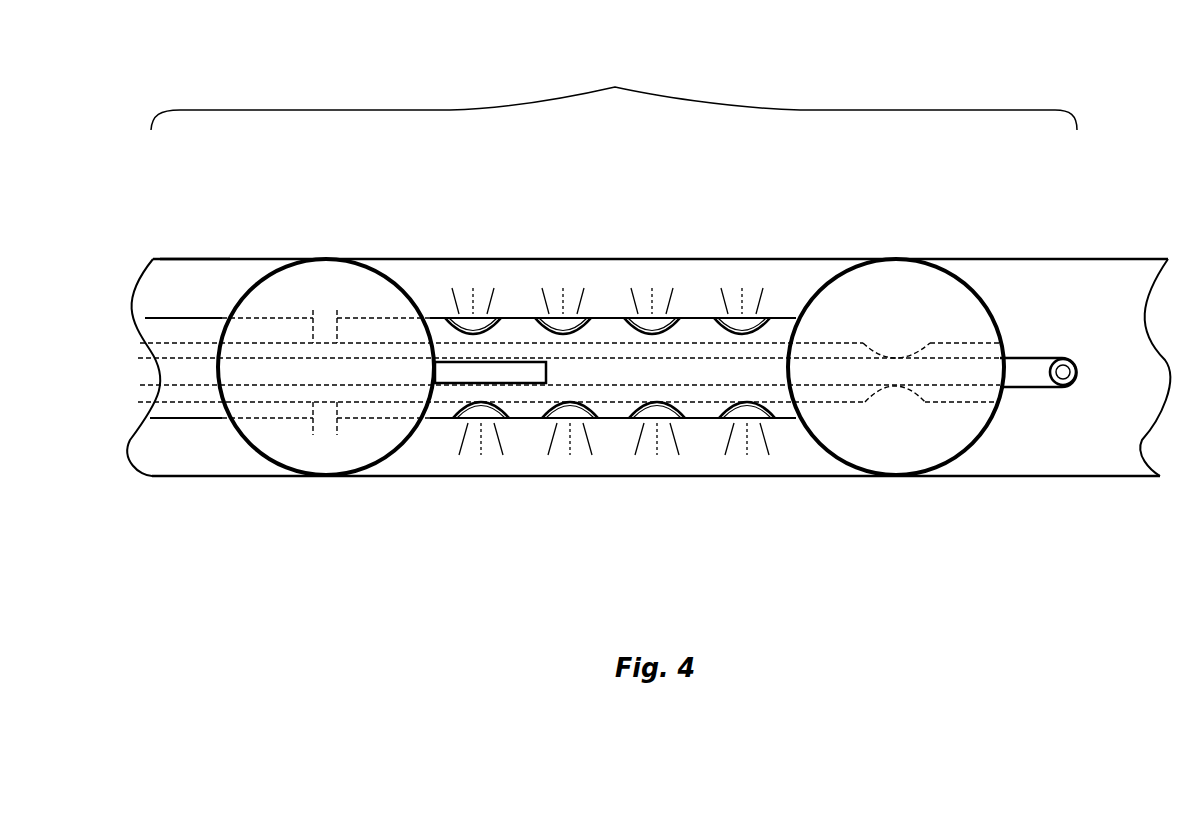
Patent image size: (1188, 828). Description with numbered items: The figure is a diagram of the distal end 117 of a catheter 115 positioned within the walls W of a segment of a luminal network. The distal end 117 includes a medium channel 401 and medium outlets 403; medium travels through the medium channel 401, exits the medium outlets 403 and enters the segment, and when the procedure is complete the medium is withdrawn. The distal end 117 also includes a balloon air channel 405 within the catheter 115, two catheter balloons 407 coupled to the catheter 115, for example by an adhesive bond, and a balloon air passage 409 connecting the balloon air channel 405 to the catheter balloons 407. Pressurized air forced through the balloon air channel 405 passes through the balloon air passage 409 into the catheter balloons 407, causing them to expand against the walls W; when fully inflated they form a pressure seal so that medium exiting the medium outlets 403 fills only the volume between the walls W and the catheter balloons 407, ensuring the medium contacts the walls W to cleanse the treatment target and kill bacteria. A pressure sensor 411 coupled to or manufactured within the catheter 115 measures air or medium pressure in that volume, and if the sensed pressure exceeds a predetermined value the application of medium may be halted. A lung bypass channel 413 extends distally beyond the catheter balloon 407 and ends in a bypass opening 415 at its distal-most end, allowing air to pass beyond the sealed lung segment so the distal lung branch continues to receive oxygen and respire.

The walls W is at (612, 258).
The catheter 115 is at (190, 257).
The distal end 117 is at (614, 93).
The medium channel 401 is at (218, 328).
The medium outlet 403 is at (772, 421).
The balloon air channel 405 is at (187, 395).
The catheter balloons 407 is at (389, 270).
The balloon air passage 409 is at (392, 468).
The pressure sensor 411 is at (525, 384).
The lung bypass channel 413 is at (1010, 390).
The bypass opening 415 is at (1072, 360).